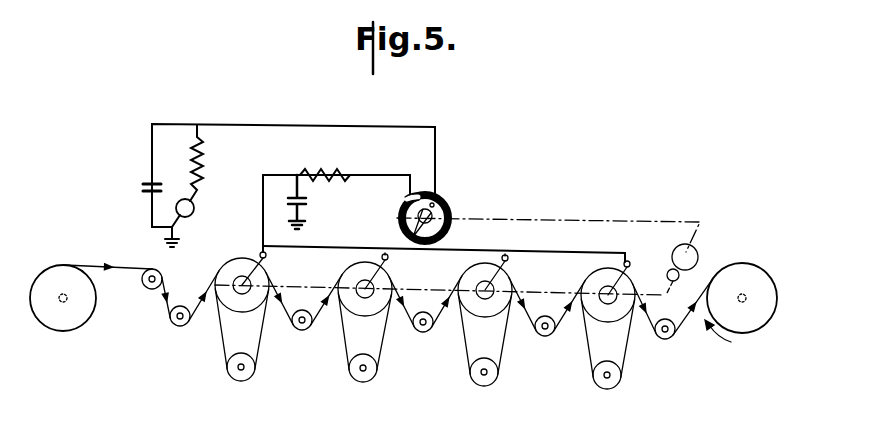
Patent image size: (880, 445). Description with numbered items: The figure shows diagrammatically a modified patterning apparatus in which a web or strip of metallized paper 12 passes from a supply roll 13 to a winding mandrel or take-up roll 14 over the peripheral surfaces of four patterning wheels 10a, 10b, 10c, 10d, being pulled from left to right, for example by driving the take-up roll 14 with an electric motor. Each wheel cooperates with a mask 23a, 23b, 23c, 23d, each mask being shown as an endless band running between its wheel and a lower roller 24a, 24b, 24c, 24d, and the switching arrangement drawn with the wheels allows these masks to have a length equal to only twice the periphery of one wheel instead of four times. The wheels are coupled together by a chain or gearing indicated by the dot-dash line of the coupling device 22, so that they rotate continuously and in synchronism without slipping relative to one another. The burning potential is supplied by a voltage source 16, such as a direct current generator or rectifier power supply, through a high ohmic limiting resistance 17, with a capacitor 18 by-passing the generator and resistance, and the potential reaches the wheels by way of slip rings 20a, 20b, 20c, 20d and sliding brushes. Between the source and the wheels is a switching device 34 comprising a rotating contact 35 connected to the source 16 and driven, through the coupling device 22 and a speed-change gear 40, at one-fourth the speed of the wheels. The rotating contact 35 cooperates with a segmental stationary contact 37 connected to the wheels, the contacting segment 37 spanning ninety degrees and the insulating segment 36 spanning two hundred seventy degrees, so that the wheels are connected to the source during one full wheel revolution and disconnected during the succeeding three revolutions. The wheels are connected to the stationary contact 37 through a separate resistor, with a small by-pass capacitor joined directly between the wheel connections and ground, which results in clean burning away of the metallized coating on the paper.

The patterning wheel 10a is at (249, 252).
The patterning wheel 10b is at (355, 268).
The patterning wheel 10c is at (475, 268).
The patterning wheel 10d is at (598, 274).
The web or strip of metallized paper 12 is at (139, 269).
The supply roll 13 is at (67, 330).
The winding mandrel or take-up roll 14 is at (760, 248).
The voltage source 16 is at (189, 206).
The high ohmic limiting resistance 17 is at (198, 166).
The capacitor 18 is at (150, 184).
The slip ring 20a is at (258, 275).
The slip ring 20b is at (380, 275).
The slip ring 20c is at (500, 275).
The slip ring 20d is at (622, 278).
The coupling device 22 is at (615, 220).
The mask 23a is at (259, 353).
The mask 23b is at (380, 355).
The mask 23c is at (500, 359).
The mask 23d is at (623, 361).
The pulley 24a is at (244, 381).
The pulley 24b is at (364, 383).
The pulley 24c is at (484, 386).
The pulley 24d is at (609, 389).
The switching device 34 is at (472, 181).
The rotating contact 35 is at (432, 214).
The insulating segment 36 is at (447, 230).
The segmental stationary contact 37 is at (404, 199).
The speed-change gear 40 is at (700, 264).